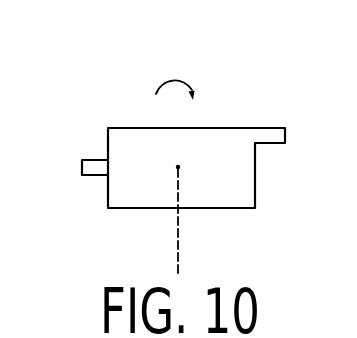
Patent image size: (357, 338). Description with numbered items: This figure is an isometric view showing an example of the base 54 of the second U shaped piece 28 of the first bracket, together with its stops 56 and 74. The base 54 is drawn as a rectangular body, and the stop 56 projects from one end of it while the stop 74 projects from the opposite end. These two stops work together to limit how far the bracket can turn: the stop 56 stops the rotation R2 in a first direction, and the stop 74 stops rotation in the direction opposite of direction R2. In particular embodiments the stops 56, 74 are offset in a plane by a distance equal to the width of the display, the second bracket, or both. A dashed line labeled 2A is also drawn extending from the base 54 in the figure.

The second U shaped piece 28 is at (118, 92).
The rotation R2 is at (175, 74).
The stop 56 is at (292, 100).
The base 54 is at (242, 177).
The stop 74 is at (90, 160).
The section line 2A is at (178, 235).